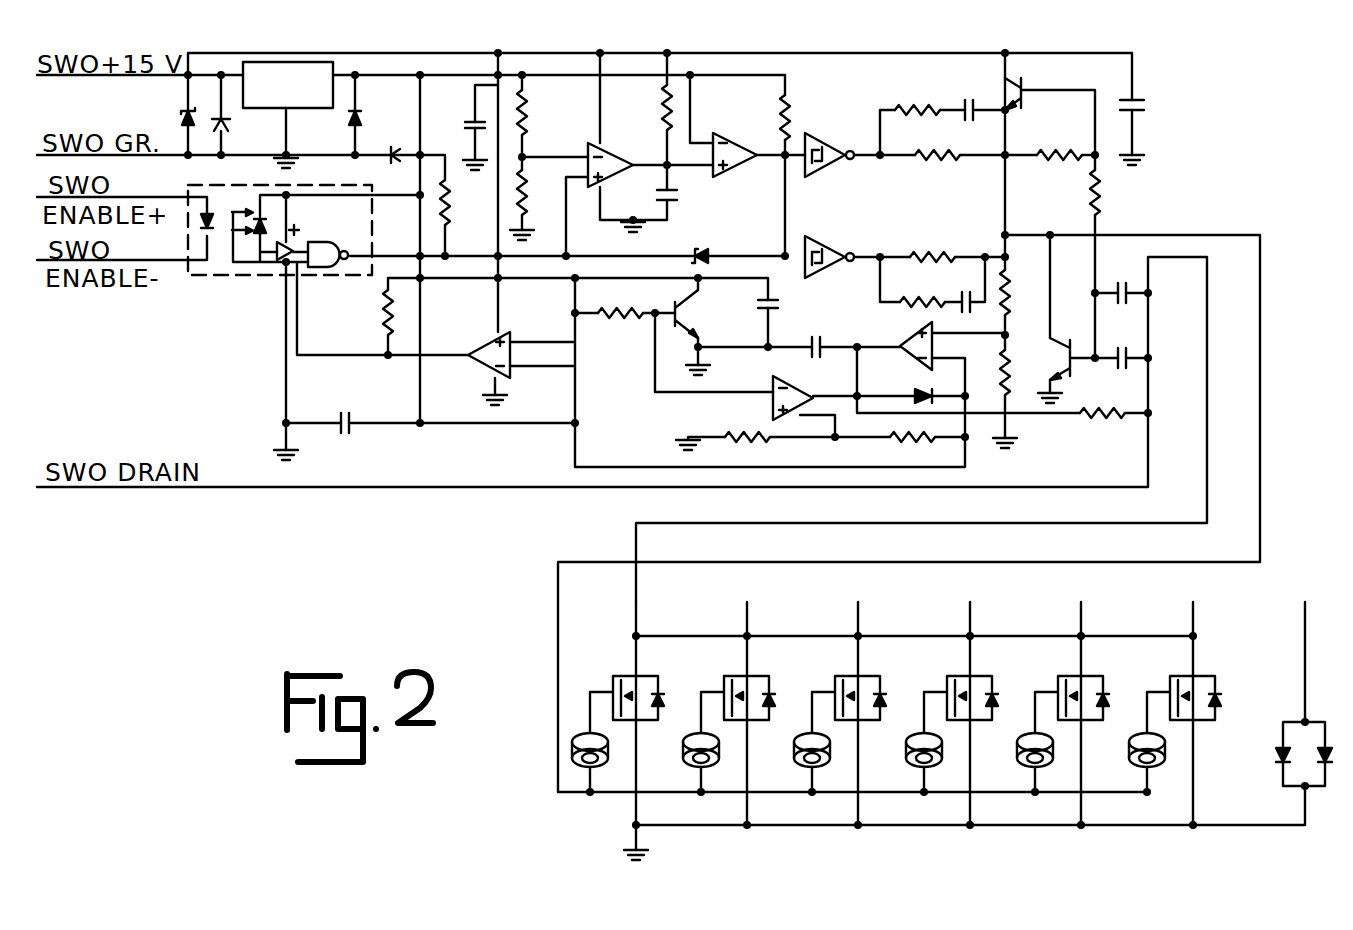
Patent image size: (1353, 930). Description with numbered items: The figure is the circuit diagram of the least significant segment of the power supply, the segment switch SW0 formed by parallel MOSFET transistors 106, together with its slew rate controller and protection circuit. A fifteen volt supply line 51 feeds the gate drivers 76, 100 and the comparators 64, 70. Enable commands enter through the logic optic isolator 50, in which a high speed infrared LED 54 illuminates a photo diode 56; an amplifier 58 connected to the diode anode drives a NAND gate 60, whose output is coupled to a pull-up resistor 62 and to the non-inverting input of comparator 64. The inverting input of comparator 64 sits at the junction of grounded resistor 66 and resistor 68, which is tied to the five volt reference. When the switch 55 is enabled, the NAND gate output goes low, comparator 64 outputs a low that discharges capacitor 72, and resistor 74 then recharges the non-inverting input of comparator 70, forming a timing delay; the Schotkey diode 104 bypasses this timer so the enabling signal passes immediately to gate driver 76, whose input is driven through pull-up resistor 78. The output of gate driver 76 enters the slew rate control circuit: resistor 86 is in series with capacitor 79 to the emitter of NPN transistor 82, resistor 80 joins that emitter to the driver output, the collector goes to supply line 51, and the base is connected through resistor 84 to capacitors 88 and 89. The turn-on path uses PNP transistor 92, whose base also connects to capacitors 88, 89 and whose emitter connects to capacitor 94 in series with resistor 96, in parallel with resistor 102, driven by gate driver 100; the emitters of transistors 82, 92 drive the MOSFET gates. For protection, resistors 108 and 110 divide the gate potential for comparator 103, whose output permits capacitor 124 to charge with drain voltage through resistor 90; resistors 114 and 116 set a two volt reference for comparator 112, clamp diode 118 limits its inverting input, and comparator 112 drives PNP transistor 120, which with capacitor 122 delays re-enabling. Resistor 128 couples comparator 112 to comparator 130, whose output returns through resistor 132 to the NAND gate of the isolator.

The logic optic isolator 50 is at (345, 292).
The 15 v supply line 51 is at (241, 72).
The high speed infrared LED 54 is at (199, 270).
The switch 55 is at (40, 263).
The photo diode 56 is at (262, 248).
The amplifier 58 is at (282, 265).
The NAND gate 60 is at (325, 242).
The pull-up resistor 62 is at (447, 222).
The comparator 64 is at (606, 150).
The resistor 66 is at (544, 198).
The resistor 68 is at (525, 128).
The comparator 70 is at (760, 163).
The capacitor 72 is at (669, 205).
The resistor 74 is at (665, 96).
The gate driver 76 is at (815, 132).
The pull-up resistor 78 is at (793, 100).
The capacitor 79 is at (975, 98).
The resistor 80 is at (945, 165).
The NPN transistor 82 is at (1023, 78).
The resistor 84 is at (1092, 200).
The resistor 86 is at (913, 108).
The capacitor 88 is at (1126, 290).
The capacitor 89 is at (1133, 368).
The resistor 90 is at (1103, 418).
The PNP transistor 92 is at (1073, 345).
The capacitor 94 is at (967, 297).
The resistor 96 is at (928, 305).
The gate driver 100 is at (848, 262).
The resistor 102 is at (925, 255).
The comparator 103 is at (921, 362).
The Schotkey diode 104 is at (706, 256).
The MOSFET transistors 106 is at (656, 676).
The resistor 108 is at (1010, 285).
The resistor 110 is at (1009, 372).
The comparator 112 is at (786, 392).
The resistor 114 is at (925, 447).
The resistor 116 is at (745, 447).
The clamp diode 118 is at (915, 398).
The PNP transistor 120 is at (672, 320).
The capacitor 122 is at (765, 296).
The capacitor 124 is at (822, 340).
The resistor 128 is at (625, 318).
The comparator 130 is at (506, 335).
The resistor 132 is at (383, 320).